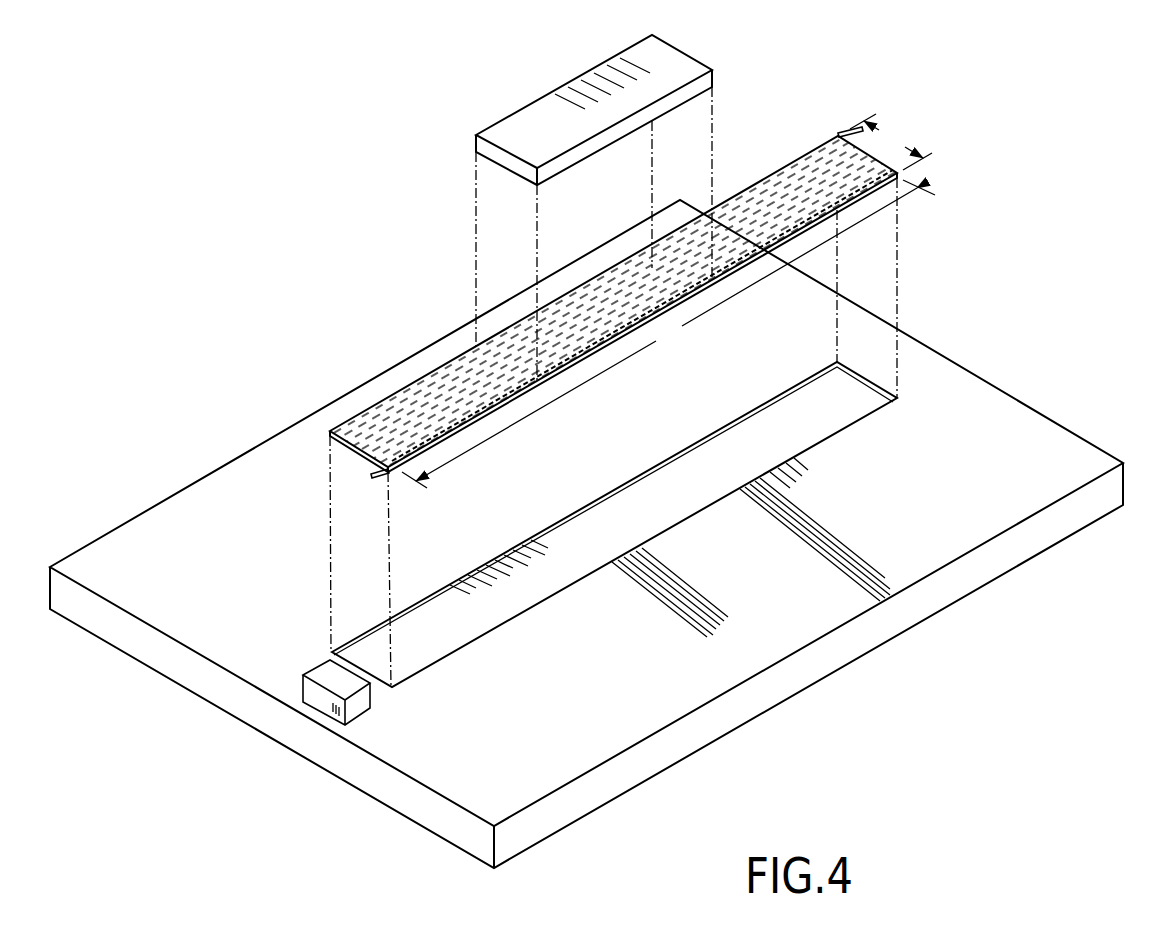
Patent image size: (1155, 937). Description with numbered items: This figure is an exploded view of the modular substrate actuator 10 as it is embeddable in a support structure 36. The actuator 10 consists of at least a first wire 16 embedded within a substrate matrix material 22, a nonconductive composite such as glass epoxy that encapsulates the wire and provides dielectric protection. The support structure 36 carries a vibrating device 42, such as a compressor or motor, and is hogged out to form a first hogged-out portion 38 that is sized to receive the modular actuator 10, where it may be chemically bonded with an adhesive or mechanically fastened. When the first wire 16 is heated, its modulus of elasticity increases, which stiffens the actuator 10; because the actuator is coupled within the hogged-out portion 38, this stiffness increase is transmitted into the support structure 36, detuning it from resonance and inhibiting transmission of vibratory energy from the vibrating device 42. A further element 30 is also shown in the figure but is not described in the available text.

The modular substrate actuator 10 is at (447, 362).
The first wire 16 is at (850, 131).
The substrate matrix material 22 is at (342, 428).
The spacer block 30 is at (312, 668).
The support structure 36 is at (700, 728).
The first hogged-out portion 38 is at (655, 510).
The vibrating device 42 is at (500, 118).